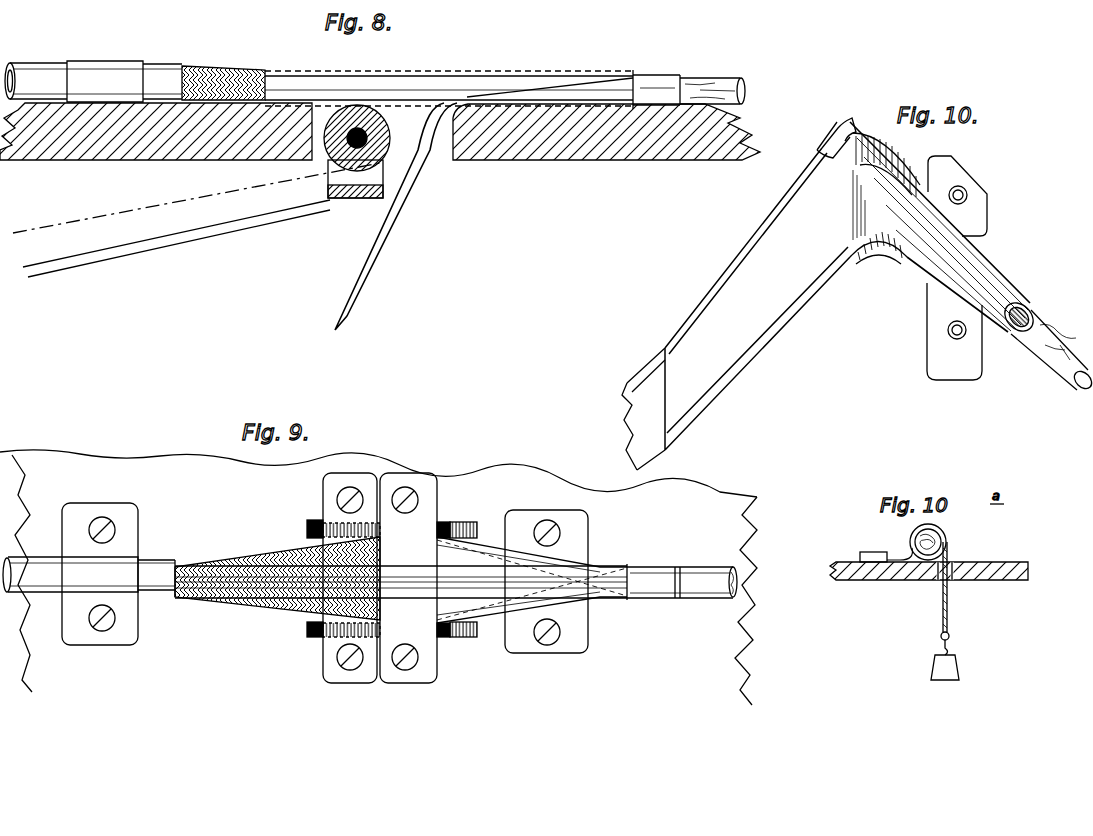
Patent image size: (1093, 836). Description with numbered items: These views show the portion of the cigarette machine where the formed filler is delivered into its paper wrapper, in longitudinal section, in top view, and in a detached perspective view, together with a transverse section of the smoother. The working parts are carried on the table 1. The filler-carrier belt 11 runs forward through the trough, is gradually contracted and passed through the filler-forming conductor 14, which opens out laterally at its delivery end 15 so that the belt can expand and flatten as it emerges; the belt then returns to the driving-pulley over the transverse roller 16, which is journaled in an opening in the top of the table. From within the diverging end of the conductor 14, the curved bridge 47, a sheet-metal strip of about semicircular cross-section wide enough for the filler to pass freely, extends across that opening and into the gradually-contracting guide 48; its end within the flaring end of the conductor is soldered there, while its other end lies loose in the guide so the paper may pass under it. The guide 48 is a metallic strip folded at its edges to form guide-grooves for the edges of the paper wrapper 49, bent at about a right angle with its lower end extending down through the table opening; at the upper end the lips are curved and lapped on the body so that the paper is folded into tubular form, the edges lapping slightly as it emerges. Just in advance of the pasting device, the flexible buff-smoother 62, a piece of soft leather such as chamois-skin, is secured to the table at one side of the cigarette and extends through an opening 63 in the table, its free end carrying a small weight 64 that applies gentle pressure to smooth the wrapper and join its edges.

In FIG. 8, the table 1 is at (426, 146).
In FIG. 8, the filler-carrier belt 11 is at (196, 220).
In FIG. 8, the filler-forming conductor 14 is at (47, 70).
In FIG. 9, the filler-forming conductor 14 is at (152, 568).
In FIG. 8, the delivery end 15 is at (192, 73).
In FIG. 9, the delivery end 15 is at (232, 557).
In FIG. 8, the transverse roller 16 is at (388, 127).
In FIG. 8, the curved bridge 47 is at (430, 79).
In FIG. 9, the curved bridge 47 is at (398, 570).
In FIG. 10, the curved bridge 47 is at (950, 248).
In FIG. 8, the gradually-contracting guide 48 is at (597, 90).
In FIG. 9, the gradually-contracting guide 48 is at (485, 552).
In FIG. 10, the gradually-contracting guide 48 is at (787, 238).
In FIG. 8, the paper wrapper 49 is at (657, 84).
In FIG. 9, the paper wrapper 49 is at (656, 575).
In FIG. 10, the paper wrapper 49 is at (1056, 330).
In FIG. 10A, the flexible buff-smoother 62 is at (948, 546).
In FIG. 10A, the opening 63 is at (950, 578).
In FIG. 10A, the weight 64 is at (945, 673).